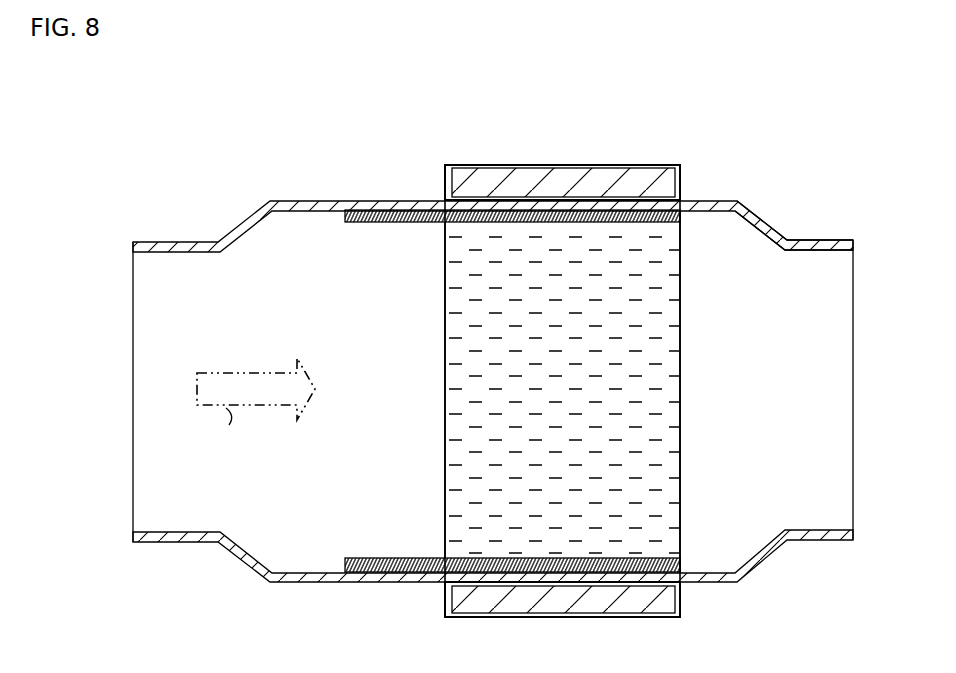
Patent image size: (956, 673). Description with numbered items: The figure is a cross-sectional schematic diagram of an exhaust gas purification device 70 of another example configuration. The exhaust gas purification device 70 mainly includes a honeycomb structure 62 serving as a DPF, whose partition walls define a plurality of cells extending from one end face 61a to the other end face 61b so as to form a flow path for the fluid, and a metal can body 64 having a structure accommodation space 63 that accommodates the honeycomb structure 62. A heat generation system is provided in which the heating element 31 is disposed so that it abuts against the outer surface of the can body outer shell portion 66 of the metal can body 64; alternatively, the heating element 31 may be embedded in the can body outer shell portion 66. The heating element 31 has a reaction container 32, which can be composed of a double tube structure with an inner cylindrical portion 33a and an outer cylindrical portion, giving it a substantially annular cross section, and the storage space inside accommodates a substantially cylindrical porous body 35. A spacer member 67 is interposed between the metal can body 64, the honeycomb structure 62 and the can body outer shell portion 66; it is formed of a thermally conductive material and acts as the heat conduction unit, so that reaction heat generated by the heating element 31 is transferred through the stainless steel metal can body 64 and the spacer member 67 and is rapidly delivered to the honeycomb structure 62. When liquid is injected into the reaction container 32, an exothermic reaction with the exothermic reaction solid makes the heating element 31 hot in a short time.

The exhaust gas purification device 70 is at (493, 367).
The can body outer shell portion 66 is at (386, 201).
The metal can body 64 is at (725, 201).
The structure accommodation space 63 is at (556, 391).
The honeycomb structure 62 is at (670, 413).
The one end face 61a is at (445, 433).
The other end face 61b is at (682, 447).
The spacer member 67 is at (573, 391).
The inner cylindrical portion 33a is at (681, 222).
The heating element 31 is at (569, 367).
The reaction container 32 is at (568, 165).
The porous body 35 is at (638, 174).